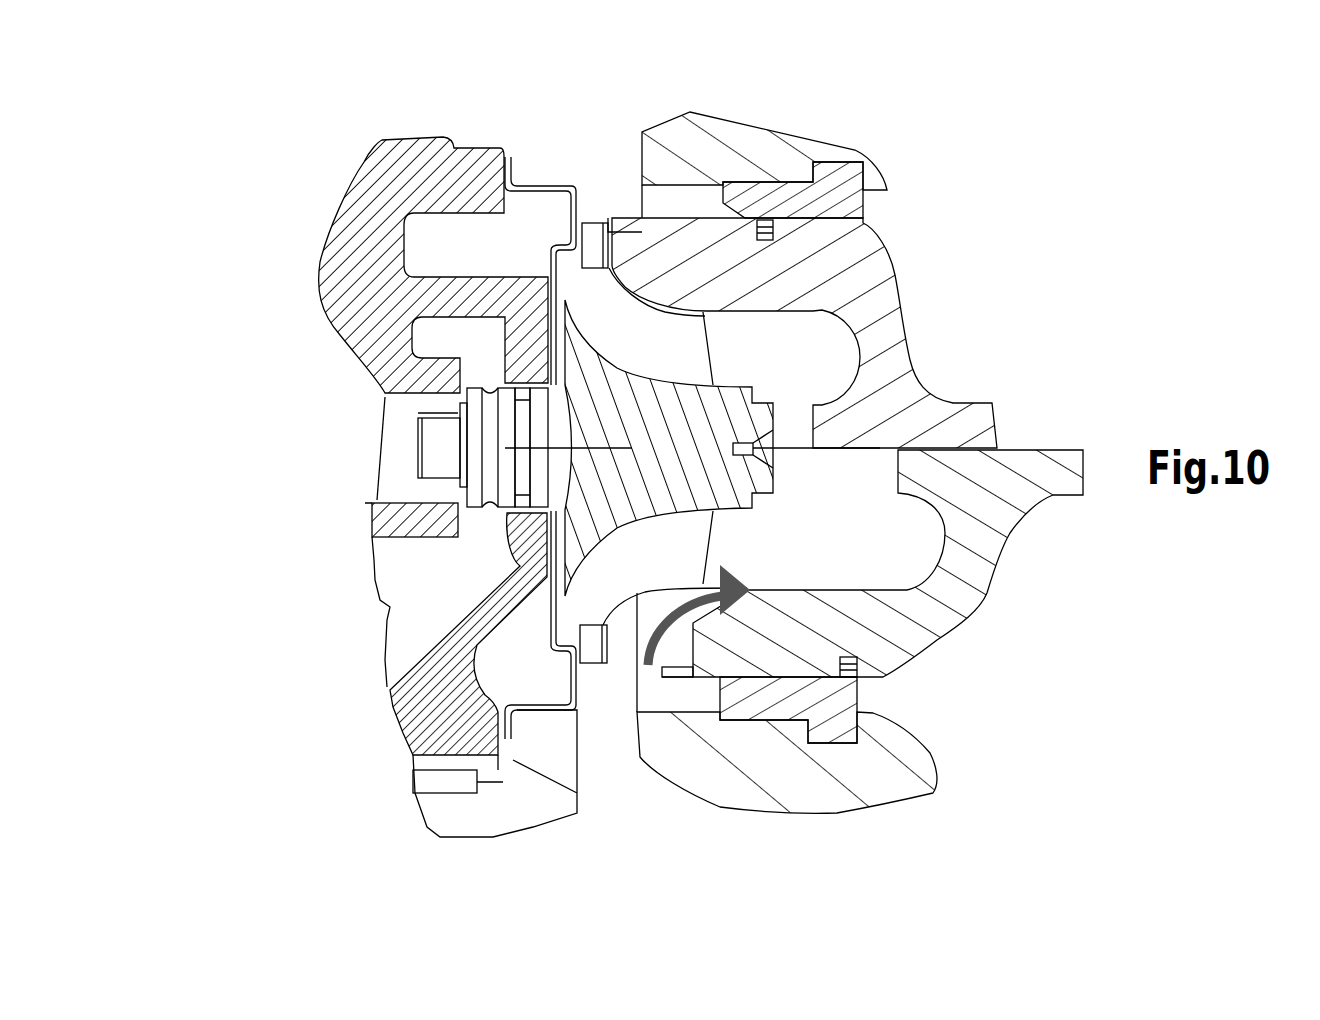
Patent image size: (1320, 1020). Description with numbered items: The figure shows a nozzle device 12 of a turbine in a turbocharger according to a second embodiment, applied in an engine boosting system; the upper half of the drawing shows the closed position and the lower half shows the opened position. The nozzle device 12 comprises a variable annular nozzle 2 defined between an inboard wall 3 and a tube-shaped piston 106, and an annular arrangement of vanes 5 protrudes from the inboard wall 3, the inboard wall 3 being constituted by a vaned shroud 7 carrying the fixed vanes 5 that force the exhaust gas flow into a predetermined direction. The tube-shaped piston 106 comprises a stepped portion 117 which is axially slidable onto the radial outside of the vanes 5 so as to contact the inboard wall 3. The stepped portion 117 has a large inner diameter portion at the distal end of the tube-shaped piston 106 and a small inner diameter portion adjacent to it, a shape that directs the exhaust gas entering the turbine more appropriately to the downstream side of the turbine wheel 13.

The variable annular nozzle 2 is at (613, 780).
The inboard wall 3 is at (577, 653).
The vanes 5 is at (590, 240).
The vaned shroud 7 is at (547, 197).
The nozzle device 12 is at (1030, 172).
The turbine wheel 13 is at (623, 437).
The tube-shaped piston 106 is at (883, 370).
The stepped portion 117 is at (608, 225).